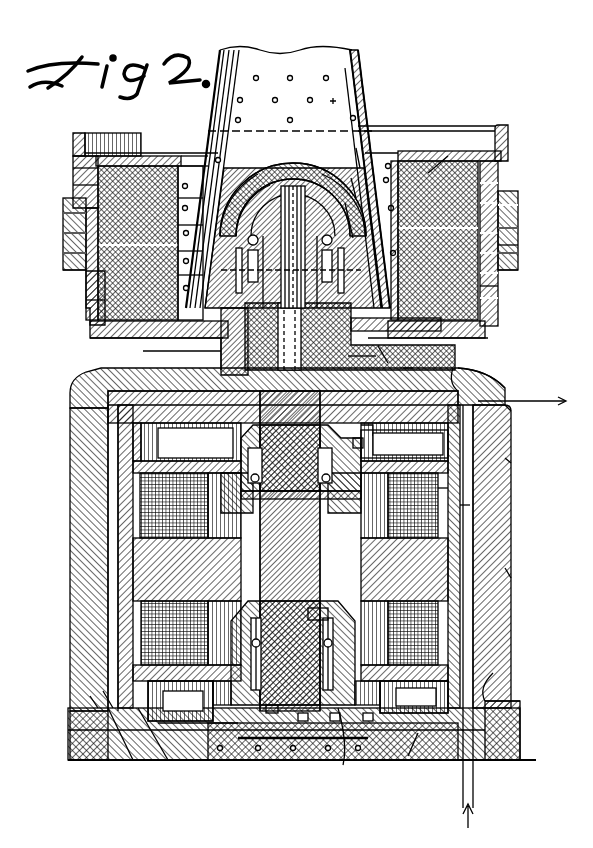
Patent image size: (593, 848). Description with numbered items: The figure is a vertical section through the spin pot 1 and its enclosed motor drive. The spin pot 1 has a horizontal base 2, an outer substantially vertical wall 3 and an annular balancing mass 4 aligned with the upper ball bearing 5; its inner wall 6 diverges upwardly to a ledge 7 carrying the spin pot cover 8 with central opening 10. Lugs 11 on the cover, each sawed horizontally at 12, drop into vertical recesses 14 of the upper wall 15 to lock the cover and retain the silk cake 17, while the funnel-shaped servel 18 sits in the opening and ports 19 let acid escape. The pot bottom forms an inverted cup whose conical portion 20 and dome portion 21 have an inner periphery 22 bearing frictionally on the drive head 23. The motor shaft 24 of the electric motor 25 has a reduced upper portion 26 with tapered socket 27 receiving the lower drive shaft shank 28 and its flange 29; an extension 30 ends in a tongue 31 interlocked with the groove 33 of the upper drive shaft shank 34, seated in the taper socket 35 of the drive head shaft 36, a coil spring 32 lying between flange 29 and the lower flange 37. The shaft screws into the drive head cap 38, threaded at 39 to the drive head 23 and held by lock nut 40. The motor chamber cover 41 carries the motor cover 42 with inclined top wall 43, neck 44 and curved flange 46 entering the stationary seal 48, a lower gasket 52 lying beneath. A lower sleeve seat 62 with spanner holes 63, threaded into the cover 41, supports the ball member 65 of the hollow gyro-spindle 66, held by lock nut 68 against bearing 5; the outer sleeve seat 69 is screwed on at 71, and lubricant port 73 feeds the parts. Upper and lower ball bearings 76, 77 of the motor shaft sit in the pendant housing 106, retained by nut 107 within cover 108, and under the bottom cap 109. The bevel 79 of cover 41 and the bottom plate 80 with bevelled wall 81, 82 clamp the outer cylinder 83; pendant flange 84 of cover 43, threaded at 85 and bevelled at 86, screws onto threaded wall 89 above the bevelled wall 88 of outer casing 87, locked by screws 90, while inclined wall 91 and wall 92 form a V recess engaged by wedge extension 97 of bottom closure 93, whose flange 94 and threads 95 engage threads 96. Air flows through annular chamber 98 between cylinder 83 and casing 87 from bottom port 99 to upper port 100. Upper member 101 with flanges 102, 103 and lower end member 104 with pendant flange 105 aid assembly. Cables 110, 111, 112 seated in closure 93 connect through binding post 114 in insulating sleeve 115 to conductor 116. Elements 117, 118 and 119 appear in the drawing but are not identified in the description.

The spin pot 1 is at (56, 242).
The horizontal base 2 is at (85, 330).
The outer substantially vertical wall 3 is at (489, 175).
The annular balancing mass 4 is at (24, 241).
The upper ball bearing 5 is at (388, 150).
The inner wall 6 is at (68, 176).
The annular ledge 7 is at (500, 162).
The spin pot cover 8 is at (413, 152).
The central opening 10 is at (362, 147).
The lugs 11 is at (109, 128).
The horizontal saw cut 12 is at (70, 158).
The vertical recesses 14 is at (75, 128).
The upper wall 15 is at (68, 136).
The silk cake 17 is at (135, 142).
The servel 18 is at (214, 90).
The ports 19 is at (508, 203).
The conical portion 20 is at (288, 240).
The dome shaped portion 21 is at (304, 172).
The inner periphery 22 is at (365, 343).
The drive head 23 is at (441, 158).
The motor shaft 24 is at (322, 582).
The electric motor 25 is at (110, 512).
The upper portion of motor shaft 26 is at (233, 433).
The tapered socket 27 is at (290, 438).
The lower drive shaft shank 28 is at (200, 332).
The flange 29 is at (162, 343).
The extension 30 is at (132, 337).
The tongue 31 is at (492, 280).
The coil spring 32 is at (85, 318).
The groove 33 is at (82, 292).
The upper drive shaft shank 34 is at (346, 170).
The taper socket 35 is at (312, 176).
The drive head shaft 36 is at (264, 174).
The lower flange 37 is at (80, 278).
The drive head cap 38 is at (262, 162).
The threaded engagement 39 is at (350, 140).
The lock nut 40 is at (338, 195).
The motor chamber cover 41 is at (376, 352).
The motor cover 42 is at (402, 360).
The inclined top wall 43 is at (455, 380).
The neck 44 is at (351, 433).
The annular flange 46 is at (506, 256).
The seal 48 is at (57, 234).
The lower annular gasket 52 is at (492, 264).
The lower sleeve seat 62 is at (362, 419).
The bottom holes 63 is at (308, 442).
The ball member 65 is at (511, 188).
The gyro-spindle 66 is at (57, 214).
The lock nut 68 is at (60, 197).
The outer sleeve seat 69 is at (472, 300).
The threaded connection 71 is at (100, 362).
The lubricant port 73 is at (404, 441).
The upper ball bearing of motor shaft 76 is at (330, 485).
The lower ball bearing of motor shaft 77 is at (180, 701).
The bevel 79 is at (472, 331).
The bottom plate 80 is at (335, 745).
The annular upwardly extending wall 81 is at (110, 757).
The bevel 82 is at (400, 748).
The outer cylinder 83 is at (120, 612).
The pendant flange 84 is at (62, 395).
The internally threaded portion 85 is at (68, 430).
The bevelled portion 86 is at (68, 456).
The outer casing 87 is at (497, 567).
The elongated upper bevelled wall 88 is at (62, 472).
The externally threaded wall 89 is at (490, 372).
The screws 90 is at (498, 453).
The inclined wall 91 is at (485, 665).
The wall 92 is at (519, 680).
The bottom closure 93 is at (160, 745).
The upwardly extending flange 94 is at (505, 696).
The interiorly threaded portion 95 is at (62, 711).
The exteriorly threaded portion 96 is at (62, 735).
The wedge shaped upper extension 97 is at (80, 690).
The air chamber 98 is at (105, 490).
The bottom port 99 is at (466, 757).
The upper port 100 is at (524, 387).
The upper member 101 is at (457, 497).
The upper annular flange 102 is at (500, 426).
The lower annular flange 103 is at (437, 480).
The lower end member 104 is at (143, 757).
The pendant annular flange 105 is at (128, 690).
The pendant housing 106 is at (318, 508).
The nut 107 is at (313, 607).
The cover 108 is at (312, 478).
The bottom cap 109 is at (212, 757).
The cable 110 is at (250, 750).
The cable 111 is at (272, 757).
The cable 112 is at (322, 755).
The binding post 114 is at (240, 740).
The insulating sleeve 115 is at (352, 690).
The conductor 116 is at (335, 757).
The ring 117 is at (508, 223).
The block 118 is at (262, 680).
The block 119 is at (220, 680).